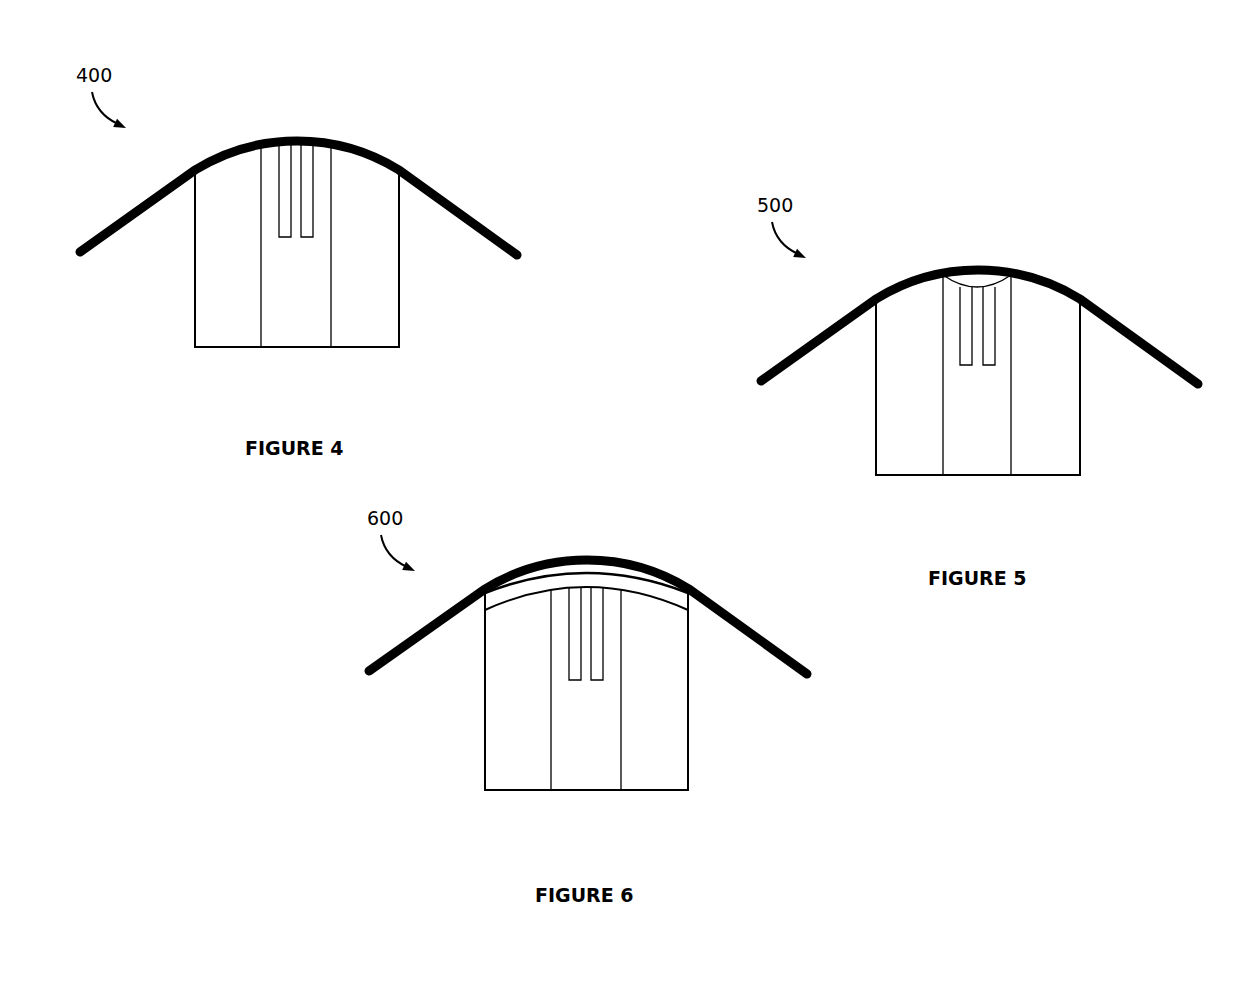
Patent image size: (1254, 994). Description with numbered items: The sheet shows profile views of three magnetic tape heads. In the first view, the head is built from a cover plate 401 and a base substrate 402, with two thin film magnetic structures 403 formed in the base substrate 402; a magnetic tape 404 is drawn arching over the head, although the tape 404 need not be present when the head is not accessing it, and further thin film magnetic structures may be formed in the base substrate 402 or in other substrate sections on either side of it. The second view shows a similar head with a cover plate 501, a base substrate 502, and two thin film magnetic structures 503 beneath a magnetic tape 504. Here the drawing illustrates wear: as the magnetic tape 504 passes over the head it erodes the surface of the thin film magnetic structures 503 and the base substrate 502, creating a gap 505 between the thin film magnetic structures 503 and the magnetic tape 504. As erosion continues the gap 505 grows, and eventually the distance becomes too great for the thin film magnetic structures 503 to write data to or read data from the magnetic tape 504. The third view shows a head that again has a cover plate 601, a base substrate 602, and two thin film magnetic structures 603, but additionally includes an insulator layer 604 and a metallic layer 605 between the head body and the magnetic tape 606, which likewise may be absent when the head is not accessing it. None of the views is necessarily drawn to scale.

In FIG. 4, the cover plate 401 is at (372, 305).
In FIG. 4, the base substrate 402 is at (297, 330).
In FIG. 4, the thin film magnetic structures 403 is at (287, 220).
In FIG. 4, the magnetic tape 404 is at (145, 198).
In FIG. 5, the cover plate 501 is at (1053, 433).
In FIG. 5, the base substrate 502 is at (978, 457).
In FIG. 5, the thin film magnetic structures 503 is at (968, 348).
In FIG. 5, the magnetic tape 504 is at (827, 329).
In FIG. 5, the gap 505 is at (980, 278).
In FIG. 6, the cover plate 601 is at (662, 747).
In FIG. 6, the base substrate 602 is at (587, 773).
In FIG. 6, the thin film magnetic structures 603 is at (577, 663).
In FIG. 6, the insulator layer 604 is at (667, 596).
In FIG. 6, the metallic layer 605 is at (555, 571).
In FIG. 6, the magnetic tape 606 is at (435, 618).